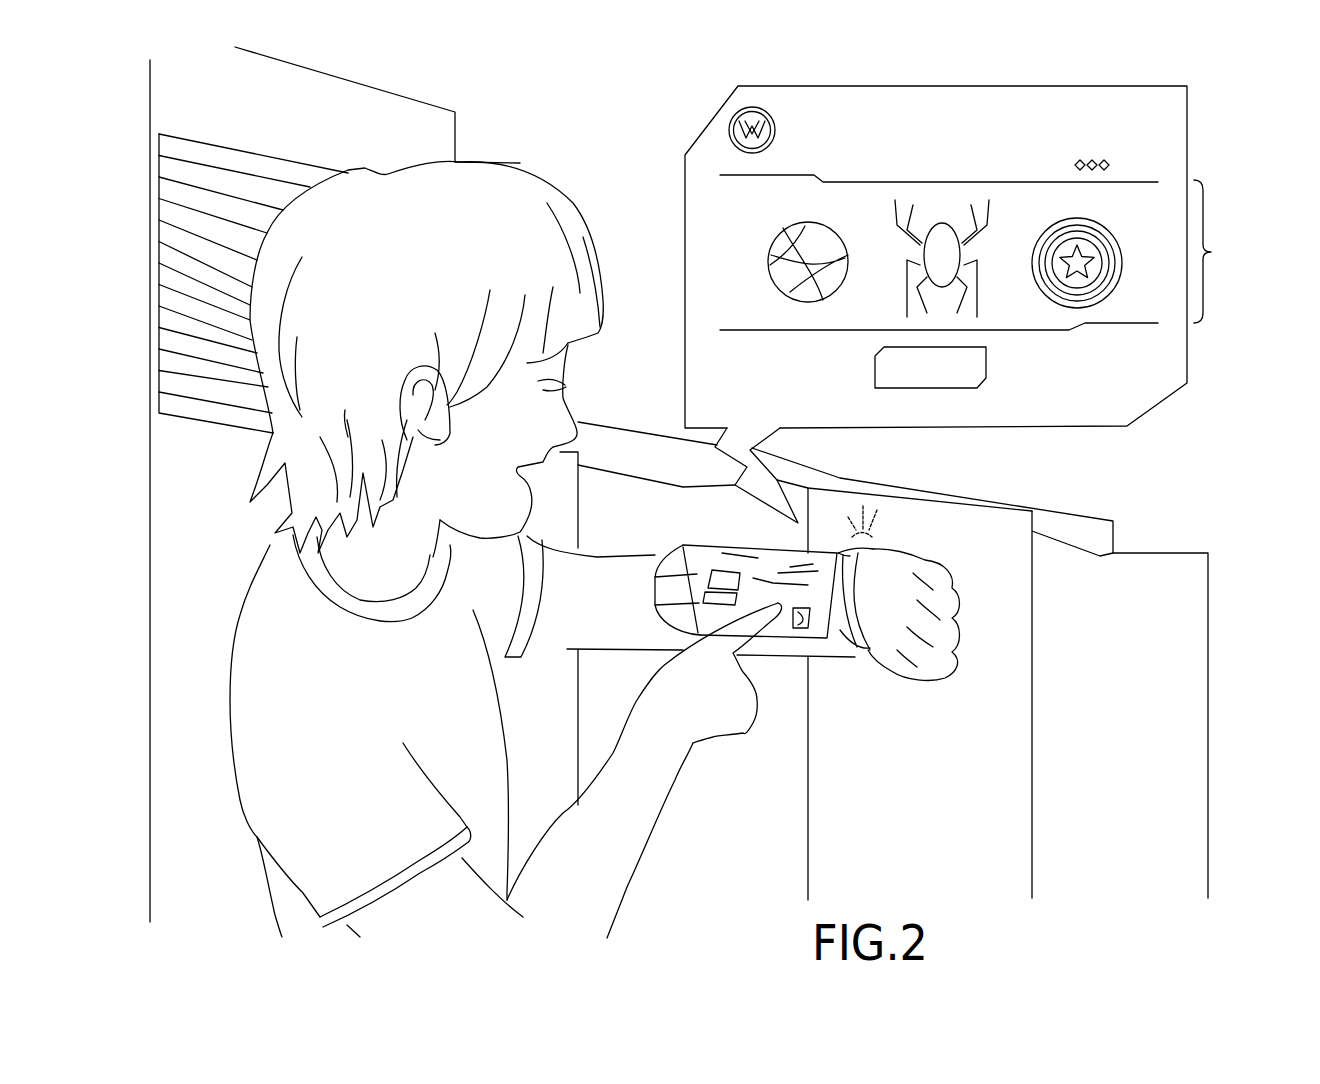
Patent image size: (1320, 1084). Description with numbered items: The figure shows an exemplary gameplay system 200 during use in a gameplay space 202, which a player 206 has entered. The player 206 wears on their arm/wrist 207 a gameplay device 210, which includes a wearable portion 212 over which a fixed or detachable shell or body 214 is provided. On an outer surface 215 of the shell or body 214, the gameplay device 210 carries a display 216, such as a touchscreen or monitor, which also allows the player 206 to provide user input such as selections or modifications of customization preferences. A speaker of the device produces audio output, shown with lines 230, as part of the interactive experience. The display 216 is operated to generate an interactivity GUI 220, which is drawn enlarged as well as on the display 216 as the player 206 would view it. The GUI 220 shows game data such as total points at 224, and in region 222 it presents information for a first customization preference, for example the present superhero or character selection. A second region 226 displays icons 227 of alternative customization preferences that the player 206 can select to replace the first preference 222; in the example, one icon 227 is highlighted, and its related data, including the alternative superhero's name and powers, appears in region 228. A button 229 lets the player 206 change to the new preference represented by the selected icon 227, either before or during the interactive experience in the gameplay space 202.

The gameplay system 200 is at (239, 117).
The gameplay space 202 is at (204, 894).
The player 206 is at (231, 649).
The arm/wrist 207 is at (659, 550).
The gameplay device 210 is at (784, 643).
The wearable portion 212 is at (870, 663).
The shell or body 214 is at (898, 553).
The outer surface 215 is at (870, 553).
The display 216 is at (777, 657).
The interactivity GUI 220 is at (685, 119).
The first customization preference region 222 is at (897, 93).
The game data 224 is at (1049, 145).
The second region 226 is at (1011, 270).
The icon 227 is at (1000, 308).
The data region 228 is at (843, 384).
The button 229 is at (966, 390).
The audio output lines 230 is at (836, 527).